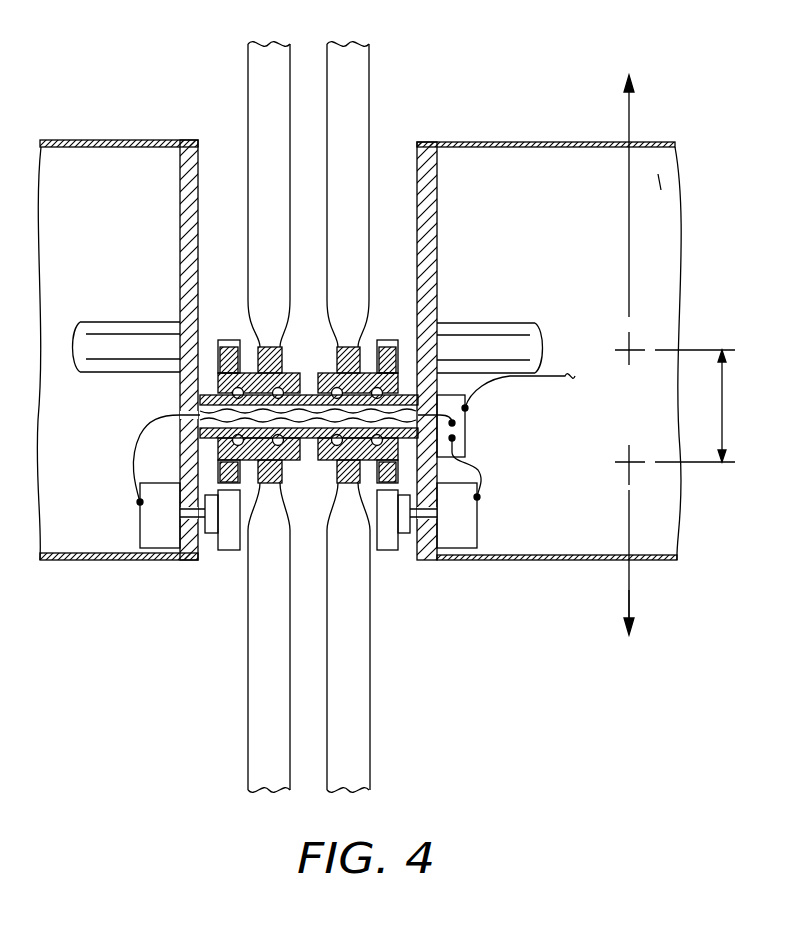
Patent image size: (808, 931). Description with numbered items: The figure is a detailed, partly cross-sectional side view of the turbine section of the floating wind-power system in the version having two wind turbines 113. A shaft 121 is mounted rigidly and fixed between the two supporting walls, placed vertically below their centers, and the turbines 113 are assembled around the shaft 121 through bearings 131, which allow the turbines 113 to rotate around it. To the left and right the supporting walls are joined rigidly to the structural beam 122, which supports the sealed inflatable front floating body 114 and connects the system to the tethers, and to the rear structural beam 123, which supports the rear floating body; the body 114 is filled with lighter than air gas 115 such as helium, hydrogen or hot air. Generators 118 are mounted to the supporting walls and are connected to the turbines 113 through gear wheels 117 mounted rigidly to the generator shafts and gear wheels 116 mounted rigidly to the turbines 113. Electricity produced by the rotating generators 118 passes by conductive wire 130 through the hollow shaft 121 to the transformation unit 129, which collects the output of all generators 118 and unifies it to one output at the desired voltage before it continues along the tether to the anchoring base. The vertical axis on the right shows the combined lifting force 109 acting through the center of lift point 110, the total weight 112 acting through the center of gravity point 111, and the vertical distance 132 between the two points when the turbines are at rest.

The combined lifting force 109 is at (632, 113).
The center of lift point 110 is at (641, 350).
The center of gravity point 111 is at (641, 462).
The total weight of the system 112 is at (632, 603).
The wind turbines 113 is at (248, 92).
The sealed inflatable front floating body 114 is at (577, 140).
The lighter than air gas 115 is at (660, 180).
The gear wheels 116 is at (383, 340).
The gear wheels 117 is at (228, 550).
The generators 118 is at (140, 532).
The shaft 121 is at (303, 445).
The structural beam 122 is at (515, 323).
The rear structural beam 123 is at (153, 322).
The transformation unit 129 is at (465, 430).
The conductive wire 130 is at (140, 433).
The bearings 131 is at (325, 373).
The vertical distance 132 is at (763, 406).